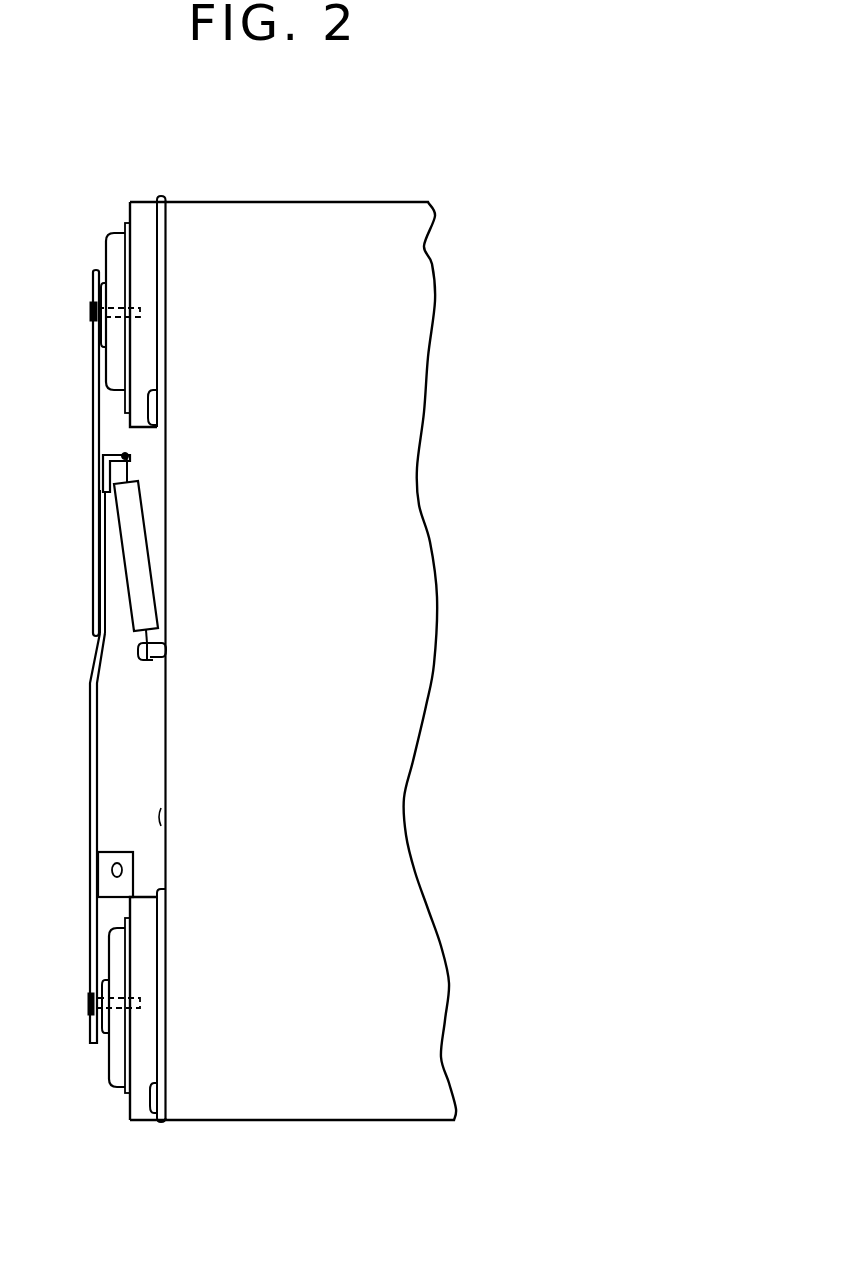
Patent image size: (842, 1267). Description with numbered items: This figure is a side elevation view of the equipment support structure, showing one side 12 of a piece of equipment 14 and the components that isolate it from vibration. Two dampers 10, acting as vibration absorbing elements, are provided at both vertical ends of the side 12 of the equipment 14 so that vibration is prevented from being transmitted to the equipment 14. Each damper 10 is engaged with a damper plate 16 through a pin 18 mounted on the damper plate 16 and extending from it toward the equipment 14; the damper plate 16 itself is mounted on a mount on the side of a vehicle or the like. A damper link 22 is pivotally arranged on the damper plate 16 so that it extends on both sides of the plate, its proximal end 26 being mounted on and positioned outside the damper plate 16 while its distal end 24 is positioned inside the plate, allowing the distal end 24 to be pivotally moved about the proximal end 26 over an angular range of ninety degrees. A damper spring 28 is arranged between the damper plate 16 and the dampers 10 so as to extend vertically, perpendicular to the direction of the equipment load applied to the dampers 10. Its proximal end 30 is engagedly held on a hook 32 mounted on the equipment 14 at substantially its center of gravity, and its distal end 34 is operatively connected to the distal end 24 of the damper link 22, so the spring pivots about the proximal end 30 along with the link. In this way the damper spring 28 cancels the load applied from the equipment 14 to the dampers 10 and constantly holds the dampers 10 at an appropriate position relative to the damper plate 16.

The damper 10 is at (106, 248).
The side 12 is at (163, 816).
The equipment 14 is at (300, 1121).
The damper plate 16 is at (96, 893).
The pin 18 is at (138, 305).
The damper link 22 is at (96, 510).
The distal end 24 is at (106, 455).
The proximal end 26 is at (96, 593).
The damper spring 28 is at (148, 527).
The proximal end 30 is at (165, 658).
The hook 32 is at (143, 660).
The distal end 34 is at (131, 468).